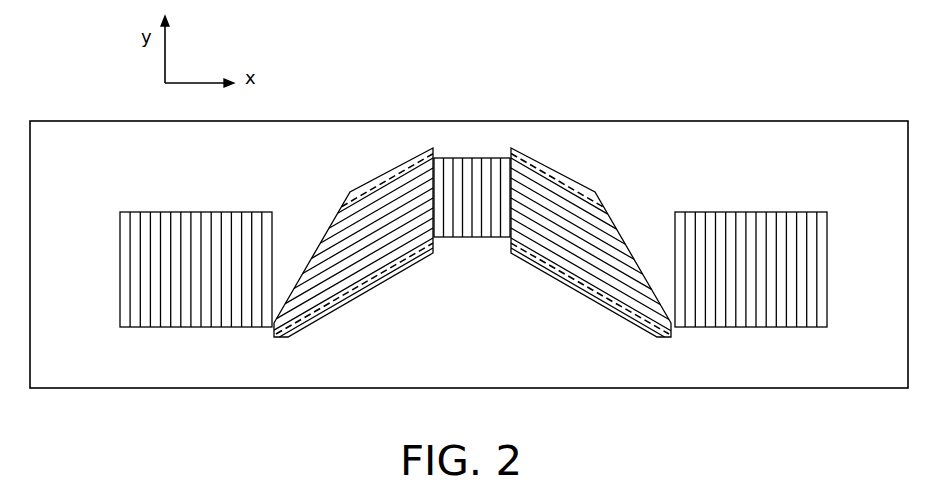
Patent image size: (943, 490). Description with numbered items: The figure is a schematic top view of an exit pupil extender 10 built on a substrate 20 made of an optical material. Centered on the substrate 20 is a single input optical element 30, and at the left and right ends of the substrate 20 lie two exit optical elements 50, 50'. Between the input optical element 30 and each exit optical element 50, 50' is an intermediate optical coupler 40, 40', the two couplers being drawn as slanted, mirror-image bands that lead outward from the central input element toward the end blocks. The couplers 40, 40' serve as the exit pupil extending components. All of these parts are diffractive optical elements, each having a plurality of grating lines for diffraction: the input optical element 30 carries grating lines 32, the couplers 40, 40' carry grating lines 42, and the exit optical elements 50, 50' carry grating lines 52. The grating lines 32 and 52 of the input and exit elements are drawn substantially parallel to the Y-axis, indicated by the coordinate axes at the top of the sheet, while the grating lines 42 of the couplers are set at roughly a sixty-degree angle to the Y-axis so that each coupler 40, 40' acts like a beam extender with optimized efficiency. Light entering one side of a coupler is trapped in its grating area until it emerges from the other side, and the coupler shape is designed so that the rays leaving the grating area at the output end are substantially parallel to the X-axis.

The exit pupil extender 10 is at (722, 82).
The substrate 20 is at (494, 353).
The input optical element 30 is at (472, 204).
The grating lines 32 is at (462, 232).
The intermediate optical coupler 40 is at (353, 242).
The intermediate optical coupler 40' is at (587, 242).
The grating lines 42 is at (361, 191).
The exit optical element 50 is at (193, 267).
The exit optical element 50' is at (751, 269).
The grating lines 52 is at (196, 247).